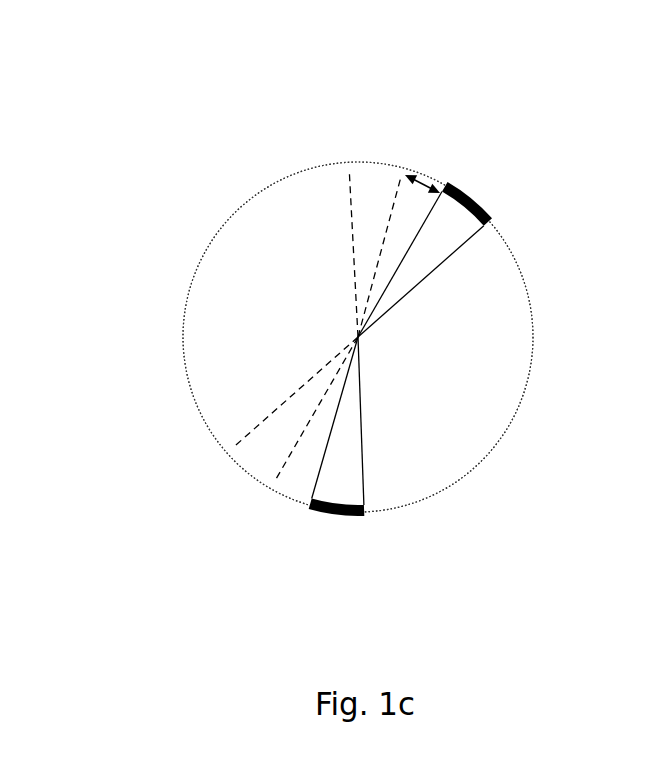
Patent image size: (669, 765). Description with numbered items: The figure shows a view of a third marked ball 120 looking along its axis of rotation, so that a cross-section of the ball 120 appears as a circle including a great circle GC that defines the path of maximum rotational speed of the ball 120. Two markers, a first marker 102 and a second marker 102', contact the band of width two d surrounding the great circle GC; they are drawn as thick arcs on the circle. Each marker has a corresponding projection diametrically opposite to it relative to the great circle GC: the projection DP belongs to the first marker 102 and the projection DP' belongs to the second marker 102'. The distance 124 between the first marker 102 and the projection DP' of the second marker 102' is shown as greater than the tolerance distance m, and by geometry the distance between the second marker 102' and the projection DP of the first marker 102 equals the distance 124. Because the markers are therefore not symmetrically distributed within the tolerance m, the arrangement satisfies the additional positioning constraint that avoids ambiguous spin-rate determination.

The third marked ball 120 is at (218, 183).
The great circle GC is at (533, 342).
The first marker 102 is at (483, 192).
The second marker 102' is at (401, 490).
The projection of the second marker DP' is at (352, 180).
The projection of the first marker DP is at (258, 495).
The distance 124 is at (433, 180).
The tolerance distance m is at (422, 192).